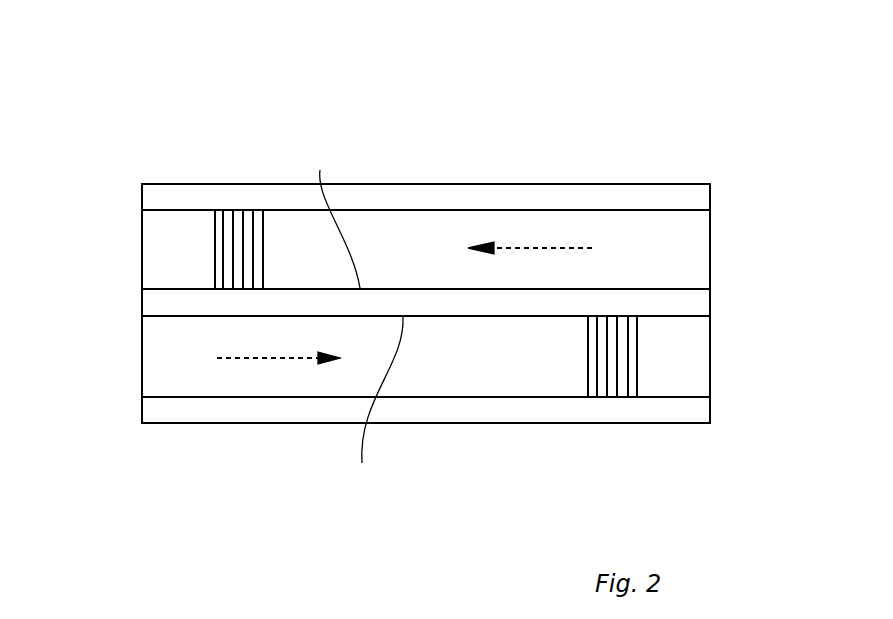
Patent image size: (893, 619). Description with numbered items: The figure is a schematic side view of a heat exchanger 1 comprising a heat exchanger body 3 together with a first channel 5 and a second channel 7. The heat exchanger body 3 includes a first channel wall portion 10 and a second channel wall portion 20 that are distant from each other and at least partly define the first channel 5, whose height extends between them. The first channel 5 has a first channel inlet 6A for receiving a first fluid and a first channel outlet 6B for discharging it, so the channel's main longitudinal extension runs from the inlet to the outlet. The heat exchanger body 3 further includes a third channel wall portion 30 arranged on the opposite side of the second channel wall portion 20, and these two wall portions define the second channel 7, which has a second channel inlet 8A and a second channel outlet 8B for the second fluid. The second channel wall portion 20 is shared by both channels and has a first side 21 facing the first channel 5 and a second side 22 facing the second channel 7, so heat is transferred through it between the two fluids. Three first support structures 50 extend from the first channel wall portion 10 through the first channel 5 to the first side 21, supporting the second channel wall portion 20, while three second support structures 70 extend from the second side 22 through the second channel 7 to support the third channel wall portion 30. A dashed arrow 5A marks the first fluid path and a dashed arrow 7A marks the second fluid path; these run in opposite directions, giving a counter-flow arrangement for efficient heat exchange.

The heat exchanger 1 is at (612, 104).
The heat exchanger body 3 is at (221, 120).
The first channel 5 is at (513, 370).
The first fluid path 5A is at (252, 358).
The first channel inlet 6A is at (142, 377).
The first channel outlet 6B is at (710, 355).
The second channel 7 is at (420, 265).
The second fluid path 7A is at (527, 248).
The second channel inlet 8A is at (710, 242).
The second channel outlet 8B is at (142, 237).
The first channel wall portion 10 is at (165, 413).
The second channel wall portion 20 is at (185, 303).
The first side 21 is at (375, 407).
The second side 22 is at (332, 215).
The third channel wall portion 30 is at (177, 197).
The first support structures 50 is at (651, 360).
The second support structures 70 is at (200, 249).